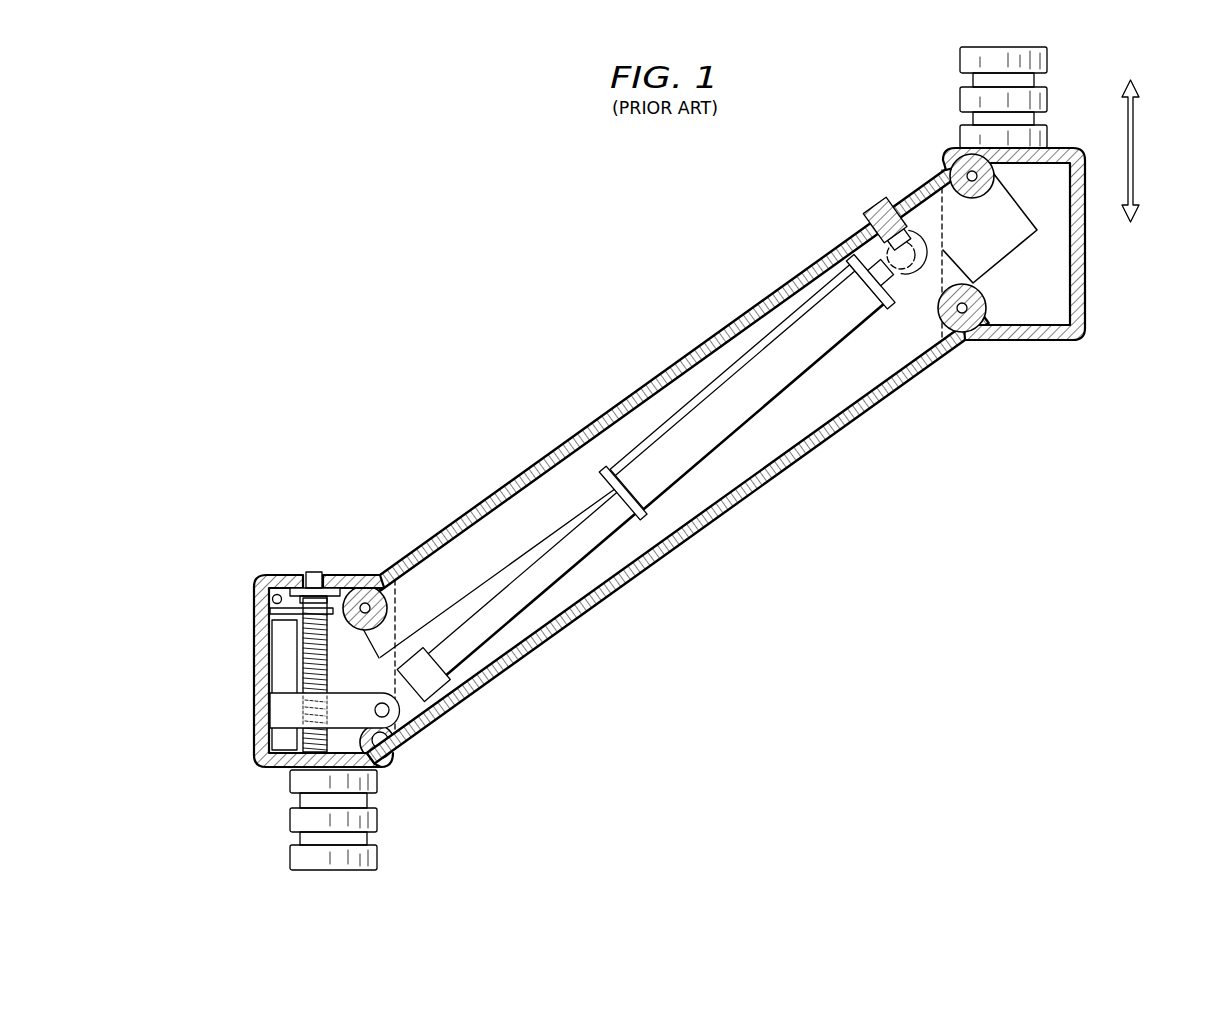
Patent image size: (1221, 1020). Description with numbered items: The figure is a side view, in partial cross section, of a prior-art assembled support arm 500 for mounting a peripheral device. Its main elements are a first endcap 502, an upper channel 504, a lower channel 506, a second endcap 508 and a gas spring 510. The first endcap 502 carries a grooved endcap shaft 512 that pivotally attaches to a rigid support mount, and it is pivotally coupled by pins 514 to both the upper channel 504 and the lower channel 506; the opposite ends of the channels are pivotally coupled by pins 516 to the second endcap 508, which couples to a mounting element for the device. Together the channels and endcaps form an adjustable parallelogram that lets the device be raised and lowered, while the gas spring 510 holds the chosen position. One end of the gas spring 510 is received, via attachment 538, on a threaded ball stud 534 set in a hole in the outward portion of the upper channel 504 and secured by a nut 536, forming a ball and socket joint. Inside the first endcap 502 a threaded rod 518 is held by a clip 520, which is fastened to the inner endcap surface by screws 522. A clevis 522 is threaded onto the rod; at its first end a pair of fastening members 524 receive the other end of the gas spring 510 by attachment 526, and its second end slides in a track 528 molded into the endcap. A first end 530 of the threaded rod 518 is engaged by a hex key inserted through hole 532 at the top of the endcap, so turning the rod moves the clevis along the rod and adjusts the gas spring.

The support arm 500 is at (603, 333).
The first endcap 502 is at (262, 592).
The upper channel 504 is at (575, 435).
The lower channel 506 is at (662, 552).
The second endcap 508 is at (1088, 262).
The gas spring 510 is at (748, 350).
The endcap shaft 512 is at (290, 818).
The pins 514 is at (393, 610).
The pins 516 is at (955, 165).
The threaded rod 518 is at (300, 660).
The clip 520 is at (270, 606).
The clevis 522 is at (272, 588).
The fastening members 524 is at (383, 765).
The attachment 526 is at (425, 683).
The track 528 is at (285, 636).
The first end of threaded rod 530 is at (305, 586).
The hole 532 is at (326, 568).
The threaded ball stud 534 is at (905, 237).
The nut 536 is at (868, 217).
The attachment 538 is at (875, 252).